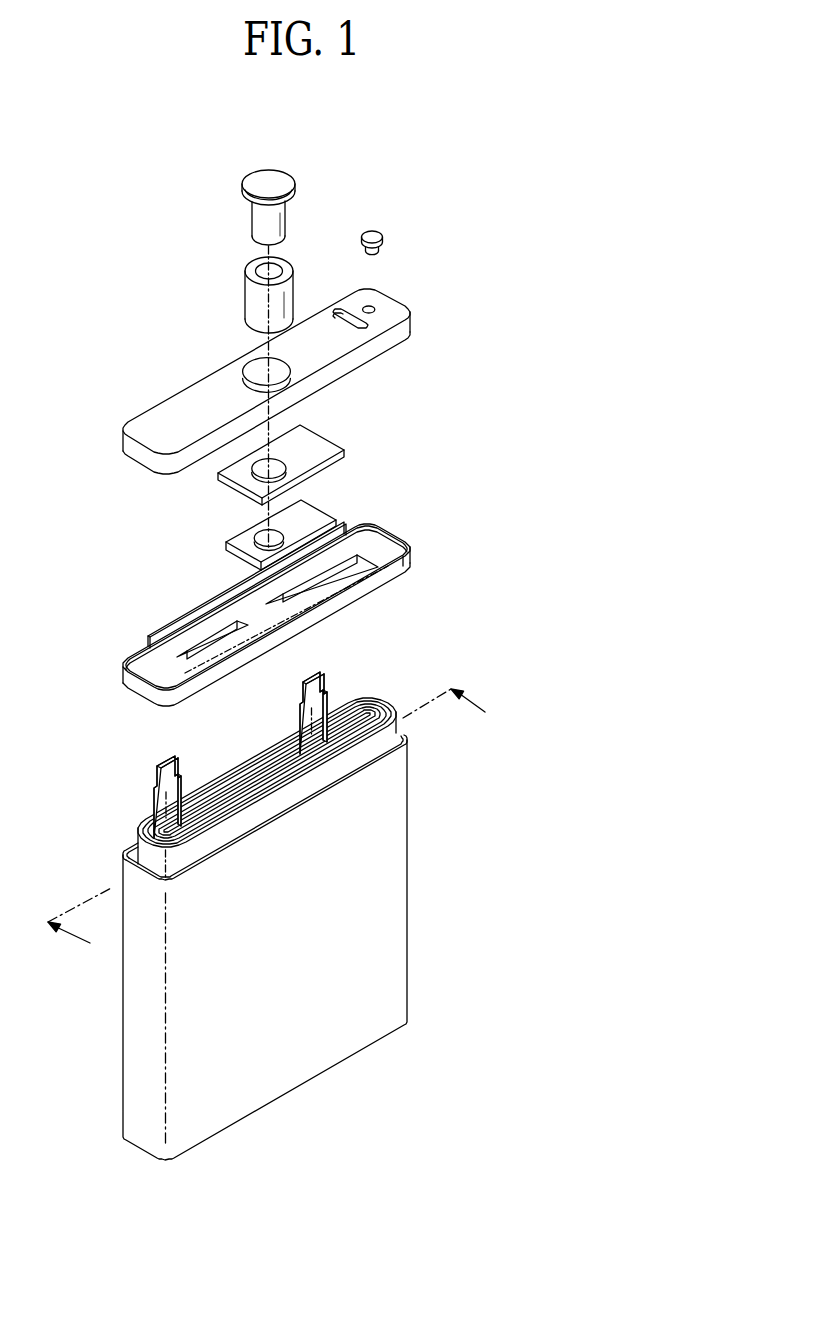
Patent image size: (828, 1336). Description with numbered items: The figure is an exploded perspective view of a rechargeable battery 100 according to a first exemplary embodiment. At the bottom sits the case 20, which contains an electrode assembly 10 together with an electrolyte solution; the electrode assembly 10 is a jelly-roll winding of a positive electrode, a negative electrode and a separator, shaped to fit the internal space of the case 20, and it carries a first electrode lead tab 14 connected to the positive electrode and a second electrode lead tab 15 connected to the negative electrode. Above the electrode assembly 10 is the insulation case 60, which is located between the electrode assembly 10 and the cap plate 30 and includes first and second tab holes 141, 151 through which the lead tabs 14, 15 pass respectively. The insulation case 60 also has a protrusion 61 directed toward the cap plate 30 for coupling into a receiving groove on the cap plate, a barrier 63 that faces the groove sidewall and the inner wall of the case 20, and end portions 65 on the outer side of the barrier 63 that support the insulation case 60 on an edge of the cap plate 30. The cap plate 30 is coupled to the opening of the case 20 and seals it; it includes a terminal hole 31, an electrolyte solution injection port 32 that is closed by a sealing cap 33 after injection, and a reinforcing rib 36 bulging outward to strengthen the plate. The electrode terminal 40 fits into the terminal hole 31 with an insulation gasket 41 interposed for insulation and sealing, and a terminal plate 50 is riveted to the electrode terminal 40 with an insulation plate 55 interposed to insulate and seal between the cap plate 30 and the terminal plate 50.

The rechargeable battery 100 is at (150, 169).
The electrode assembly 10 is at (260, 751).
The first electrode lead tab 14 is at (154, 768).
The second electrode lead tab 15 is at (324, 693).
The case 20 is at (143, 1026).
The cap plate 30 is at (263, 355).
The terminal hole 31 is at (255, 364).
The electrolyte solution injection port 32 is at (374, 310).
The sealing cap 33 is at (371, 233).
The reinforcing rib 36 is at (352, 312).
The electrode terminal 40 is at (283, 181).
The insulation gasket 41 is at (256, 293).
The terminal plate 50 is at (306, 521).
The insulation plate 55 is at (311, 448).
The insulation case 60 is at (286, 597).
The protrusion 61 is at (165, 628).
The barrier 63 is at (258, 652).
The end portions 65 is at (383, 568).
The first tab hole 141 is at (210, 634).
The second tab hole 151 is at (282, 595).